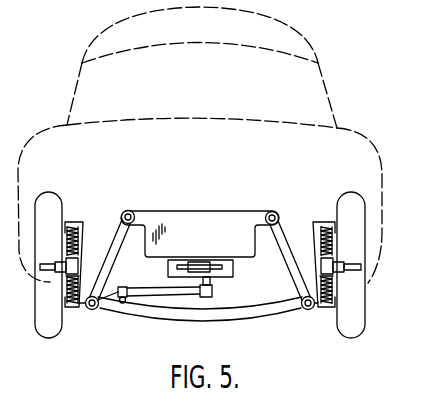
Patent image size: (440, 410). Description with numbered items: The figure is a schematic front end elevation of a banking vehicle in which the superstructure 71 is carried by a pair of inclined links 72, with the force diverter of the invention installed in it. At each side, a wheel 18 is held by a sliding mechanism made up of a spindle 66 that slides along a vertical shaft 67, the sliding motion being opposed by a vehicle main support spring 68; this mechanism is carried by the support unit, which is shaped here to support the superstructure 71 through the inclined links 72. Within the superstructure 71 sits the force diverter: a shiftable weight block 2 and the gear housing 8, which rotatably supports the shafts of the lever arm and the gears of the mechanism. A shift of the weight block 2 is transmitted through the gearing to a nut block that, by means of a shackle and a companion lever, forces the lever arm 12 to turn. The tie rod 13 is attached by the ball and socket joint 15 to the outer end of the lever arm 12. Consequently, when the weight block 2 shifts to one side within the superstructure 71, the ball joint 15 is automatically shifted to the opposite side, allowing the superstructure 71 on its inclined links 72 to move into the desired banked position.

The weight block 2 is at (198, 265).
The gear housing 8 is at (228, 271).
The lever arm 12 is at (212, 286).
The tie rod 13 is at (155, 287).
The ball and socket joint 15 is at (210, 297).
The wheel 18 is at (52, 192).
The spindle 66 is at (55, 263).
The vertical shaft 67 is at (70, 288).
The vehicle main support spring 68 is at (67, 228).
The superstructure 71 is at (209, 210).
The inclined link 72 is at (115, 243).